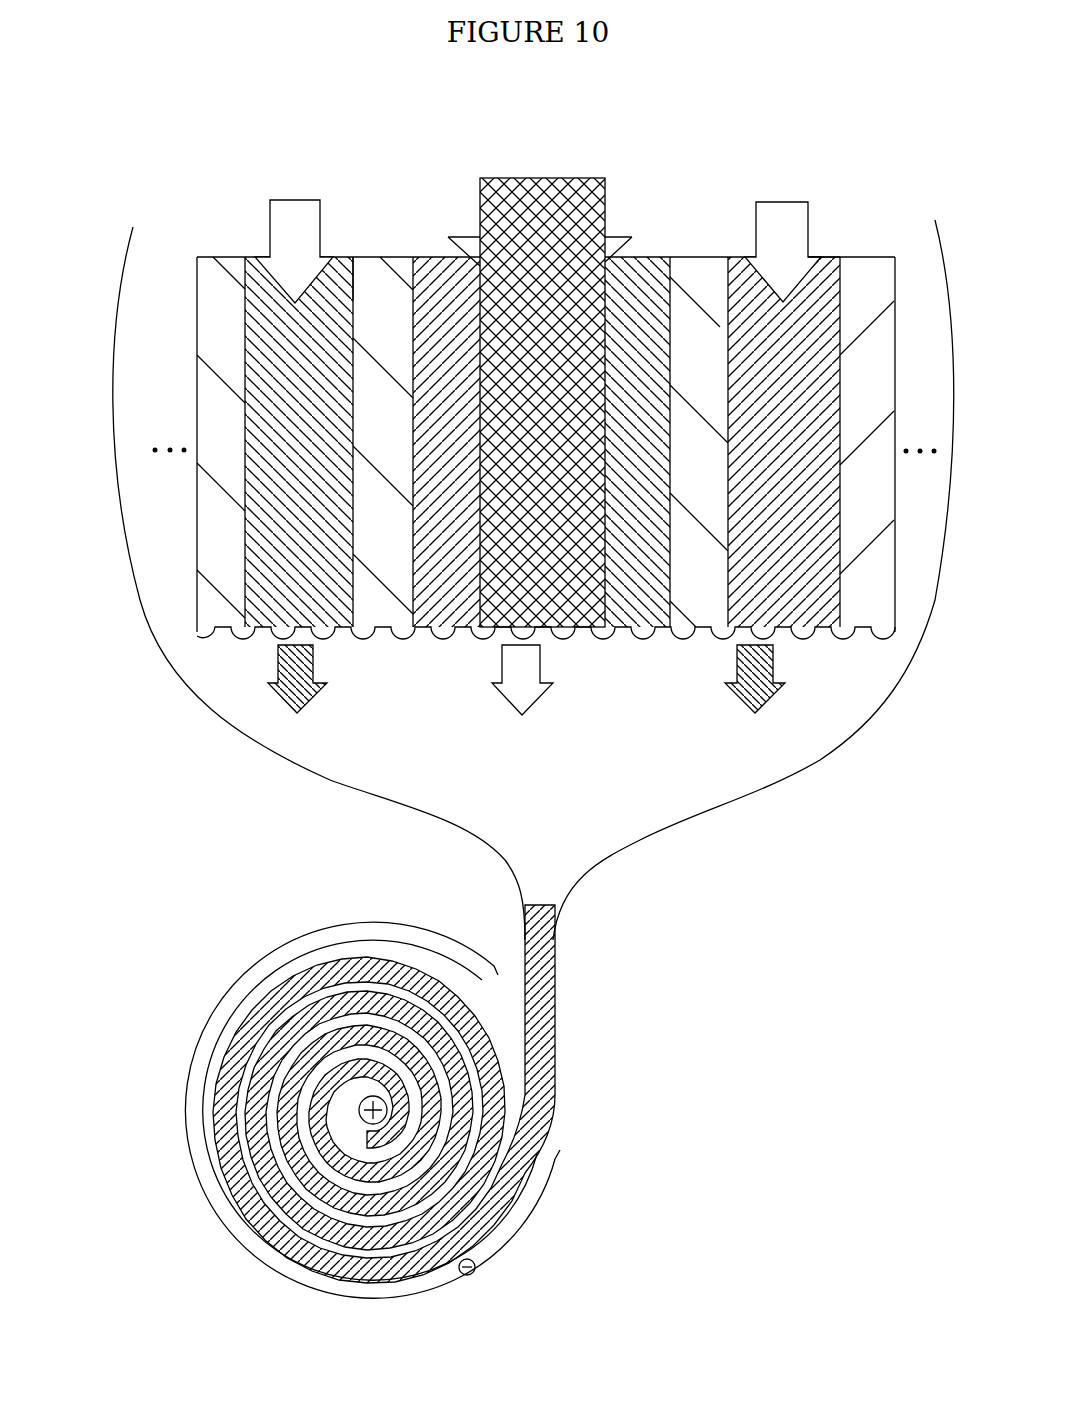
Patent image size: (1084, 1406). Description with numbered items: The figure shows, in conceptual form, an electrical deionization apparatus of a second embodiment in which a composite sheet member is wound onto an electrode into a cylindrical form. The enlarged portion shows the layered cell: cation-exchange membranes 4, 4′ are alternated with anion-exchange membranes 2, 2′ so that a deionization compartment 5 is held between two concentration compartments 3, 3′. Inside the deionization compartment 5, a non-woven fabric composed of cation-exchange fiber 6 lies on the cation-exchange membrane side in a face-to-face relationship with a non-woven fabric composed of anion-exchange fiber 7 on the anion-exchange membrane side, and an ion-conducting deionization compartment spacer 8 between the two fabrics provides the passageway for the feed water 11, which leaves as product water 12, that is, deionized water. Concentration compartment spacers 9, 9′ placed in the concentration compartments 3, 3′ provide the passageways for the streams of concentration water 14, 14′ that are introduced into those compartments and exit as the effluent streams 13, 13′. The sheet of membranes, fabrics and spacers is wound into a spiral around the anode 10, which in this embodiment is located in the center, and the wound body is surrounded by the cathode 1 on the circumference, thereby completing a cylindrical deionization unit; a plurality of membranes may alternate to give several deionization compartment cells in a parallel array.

The cathode 1 is at (510, 1227).
The anion-exchange membrane 2 is at (868, 622).
The anion-exchange membrane 2′ is at (373, 640).
The concentration compartment 3 is at (795, 630).
The concentration compartment 3′ is at (337, 640).
The cation-exchange membrane 4 is at (687, 607).
The cation-exchange membrane 4′ is at (217, 640).
The deionization compartment 5 is at (566, 638).
The non-woven fabric composed of cation-exchange fiber 6 is at (620, 638).
The non-woven fabric composed of anion-exchange fiber 7 is at (440, 640).
The deionization compartment spacer 8 is at (553, 282).
The concentration compartment spacer 9 is at (810, 283).
The concentration compartment spacer 9′ is at (352, 257).
The anode 10 is at (358, 1108).
The feed water 11 is at (540, 176).
The product water 12 is at (537, 700).
The effluent stream of water from the concentration compartment 13 is at (730, 683).
The effluent stream of water from the concentration compartment 13′ is at (284, 703).
The stream of concentration water 14 is at (758, 212).
The stream of concentration water 14′ is at (288, 216).